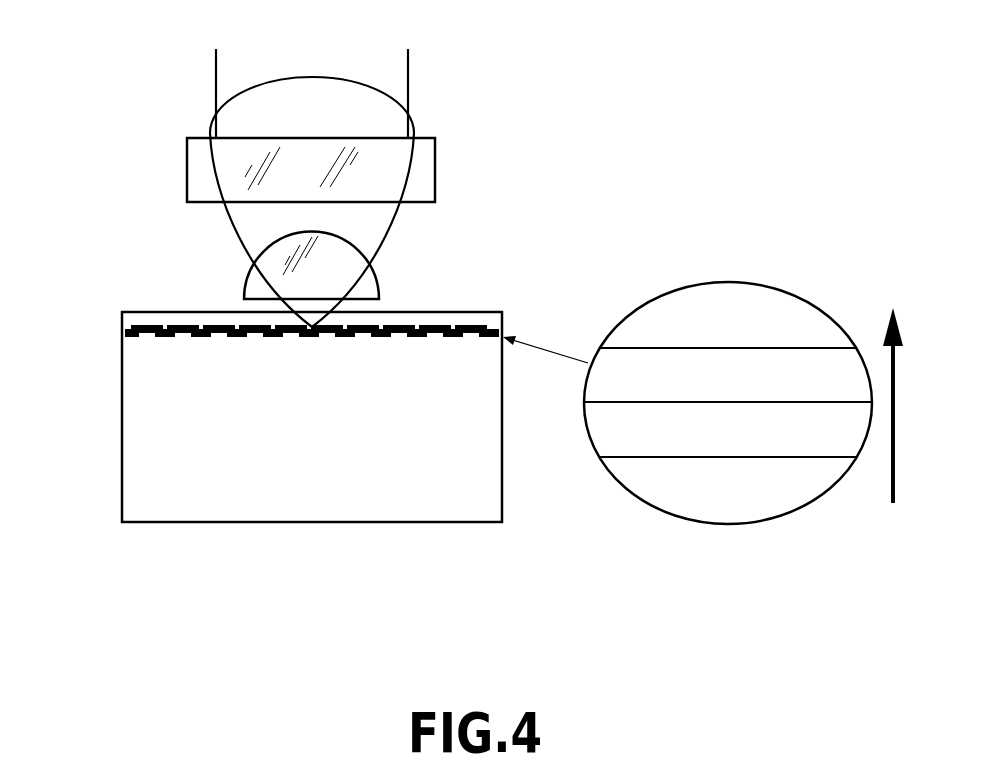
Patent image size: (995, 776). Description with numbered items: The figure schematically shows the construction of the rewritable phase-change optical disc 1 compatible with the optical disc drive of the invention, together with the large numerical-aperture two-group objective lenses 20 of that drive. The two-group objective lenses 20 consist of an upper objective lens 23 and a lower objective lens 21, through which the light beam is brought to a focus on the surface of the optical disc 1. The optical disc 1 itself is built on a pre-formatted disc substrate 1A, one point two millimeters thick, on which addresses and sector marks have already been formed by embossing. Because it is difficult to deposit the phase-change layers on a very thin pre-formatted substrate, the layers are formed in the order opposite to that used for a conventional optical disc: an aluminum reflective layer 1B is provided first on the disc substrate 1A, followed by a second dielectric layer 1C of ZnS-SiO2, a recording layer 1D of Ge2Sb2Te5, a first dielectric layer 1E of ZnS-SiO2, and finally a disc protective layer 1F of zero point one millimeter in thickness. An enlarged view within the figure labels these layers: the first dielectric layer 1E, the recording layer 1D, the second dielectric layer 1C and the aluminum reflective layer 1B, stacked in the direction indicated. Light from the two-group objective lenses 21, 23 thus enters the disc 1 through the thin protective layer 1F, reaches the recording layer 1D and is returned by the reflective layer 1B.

The optical disc 1 is at (261, 416).
The disc substrate 1A is at (442, 518).
The aluminum reflective layer 1B is at (730, 512).
The second dielectric layer 1C is at (853, 432).
The recording layer 1D is at (857, 370).
The first dielectric layer 1E is at (747, 295).
The disc protective layer 1F is at (462, 312).
The two-group objective lenses 20 is at (83, 125).
The objective lens 21 is at (258, 288).
The objective lens 23 is at (187, 165).